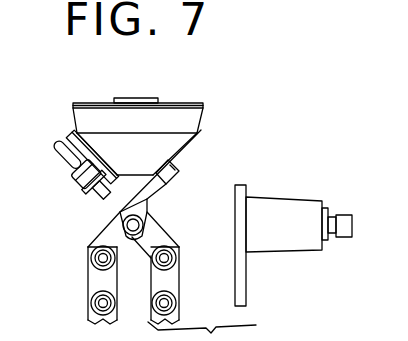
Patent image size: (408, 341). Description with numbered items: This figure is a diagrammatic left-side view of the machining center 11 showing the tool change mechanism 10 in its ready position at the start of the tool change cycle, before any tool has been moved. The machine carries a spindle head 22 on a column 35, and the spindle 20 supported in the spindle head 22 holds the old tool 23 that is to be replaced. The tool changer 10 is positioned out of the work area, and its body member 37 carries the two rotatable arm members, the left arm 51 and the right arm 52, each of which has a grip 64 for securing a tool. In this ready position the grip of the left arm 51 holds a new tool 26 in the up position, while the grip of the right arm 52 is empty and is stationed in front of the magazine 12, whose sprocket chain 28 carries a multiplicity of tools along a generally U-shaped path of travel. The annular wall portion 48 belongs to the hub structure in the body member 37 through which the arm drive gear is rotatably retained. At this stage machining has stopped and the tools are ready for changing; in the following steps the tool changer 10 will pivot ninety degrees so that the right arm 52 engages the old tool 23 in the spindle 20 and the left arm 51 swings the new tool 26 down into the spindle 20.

The tool change mechanism 10 is at (183, 87).
The machining center 11 is at (255, 296).
The magazine 12 is at (87, 263).
The spindle 20 is at (330, 212).
The spindle head 22 is at (297, 203).
The tool 23 is at (348, 238).
The tool 26 is at (63, 153).
The sprocket chain 28 is at (100, 280).
The column 35 is at (248, 185).
The body member 37 is at (187, 120).
The annular wall portion 48 is at (196, 137).
The left arm 51 is at (76, 178).
The right arm 52 is at (178, 181).
The grip 64 is at (78, 192).